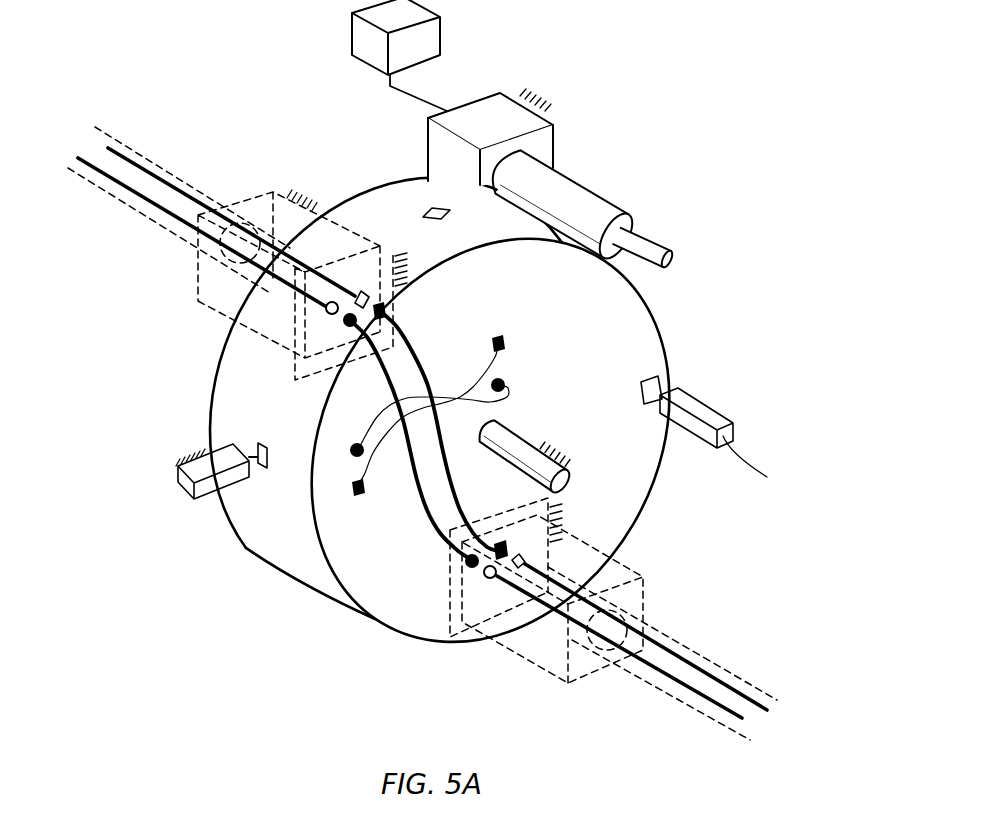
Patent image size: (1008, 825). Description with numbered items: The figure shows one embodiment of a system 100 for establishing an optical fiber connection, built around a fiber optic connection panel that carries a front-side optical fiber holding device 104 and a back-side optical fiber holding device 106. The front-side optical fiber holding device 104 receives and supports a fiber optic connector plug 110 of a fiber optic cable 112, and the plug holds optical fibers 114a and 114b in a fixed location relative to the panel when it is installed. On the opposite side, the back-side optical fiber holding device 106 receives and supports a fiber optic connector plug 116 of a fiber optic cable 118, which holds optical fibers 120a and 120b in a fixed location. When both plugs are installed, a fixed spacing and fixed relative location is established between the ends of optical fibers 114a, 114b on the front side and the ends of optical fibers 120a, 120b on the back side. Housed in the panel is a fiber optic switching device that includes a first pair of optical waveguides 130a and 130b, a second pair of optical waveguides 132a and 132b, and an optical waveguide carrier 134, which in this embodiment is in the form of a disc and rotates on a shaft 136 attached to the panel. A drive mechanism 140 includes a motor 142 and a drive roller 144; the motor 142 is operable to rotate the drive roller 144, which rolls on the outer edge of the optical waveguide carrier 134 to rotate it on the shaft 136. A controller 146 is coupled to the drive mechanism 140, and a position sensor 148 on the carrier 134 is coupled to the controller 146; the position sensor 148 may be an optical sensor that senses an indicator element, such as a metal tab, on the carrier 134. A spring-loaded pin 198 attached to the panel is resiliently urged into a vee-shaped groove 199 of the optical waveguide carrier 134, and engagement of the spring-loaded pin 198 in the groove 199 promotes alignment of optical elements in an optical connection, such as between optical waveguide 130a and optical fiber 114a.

The system 100 is at (703, 110).
The front-side optical fiber holding device 104 is at (449, 598).
The back-side optical fiber holding device 106 is at (392, 248).
The fiber optic connector plug 110 is at (547, 675).
The fiber optic cable 112 is at (768, 691).
The optical fiber 114a is at (703, 700).
The optical fiber 114b is at (717, 672).
The fiber optic connector plug 116 is at (215, 310).
The fiber optic cable 118 is at (127, 146).
The optical fiber 120a is at (158, 207).
The optical fiber 120b is at (170, 183).
The optical waveguide 130a is at (444, 541).
The optical waveguide 130b is at (461, 510).
The optical waveguide 132a is at (383, 410).
The optical waveguide 132b is at (497, 355).
The optical waveguide carrier 134 is at (562, 293).
The shaft 136 is at (527, 440).
The drive mechanism 140 is at (556, 88).
The motor 142 is at (496, 95).
The drive roller 144 is at (575, 183).
The controller 146 is at (350, 41).
The position sensor 148 is at (700, 408).
The spring-loaded pin 198 is at (257, 450).
The vee-shaped groove 199 is at (258, 470).